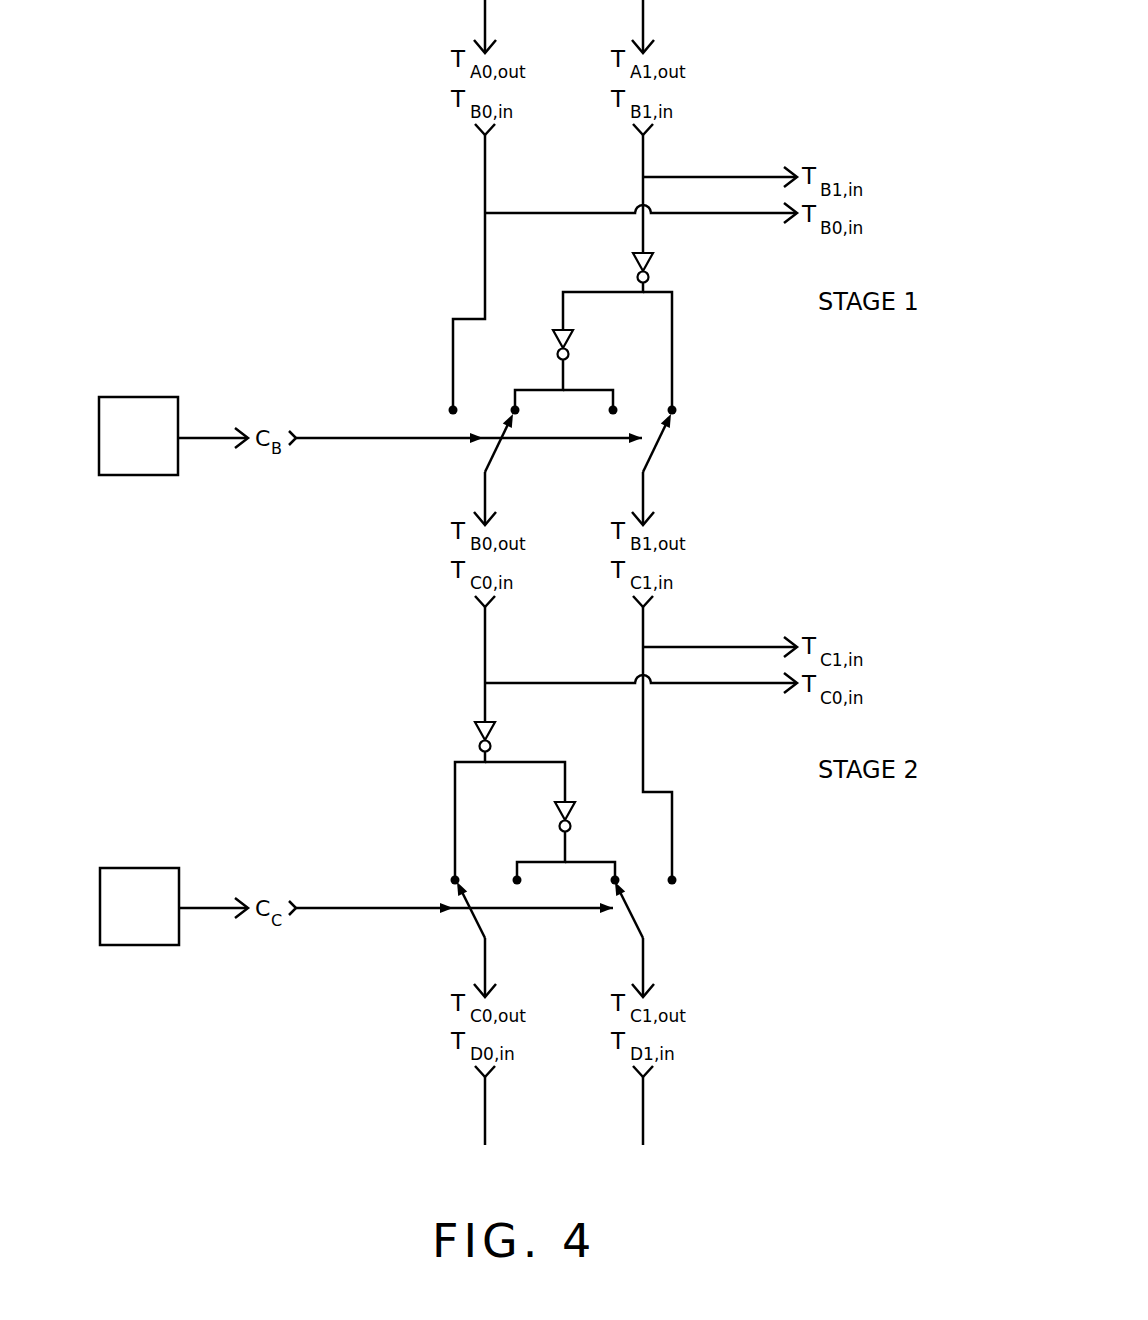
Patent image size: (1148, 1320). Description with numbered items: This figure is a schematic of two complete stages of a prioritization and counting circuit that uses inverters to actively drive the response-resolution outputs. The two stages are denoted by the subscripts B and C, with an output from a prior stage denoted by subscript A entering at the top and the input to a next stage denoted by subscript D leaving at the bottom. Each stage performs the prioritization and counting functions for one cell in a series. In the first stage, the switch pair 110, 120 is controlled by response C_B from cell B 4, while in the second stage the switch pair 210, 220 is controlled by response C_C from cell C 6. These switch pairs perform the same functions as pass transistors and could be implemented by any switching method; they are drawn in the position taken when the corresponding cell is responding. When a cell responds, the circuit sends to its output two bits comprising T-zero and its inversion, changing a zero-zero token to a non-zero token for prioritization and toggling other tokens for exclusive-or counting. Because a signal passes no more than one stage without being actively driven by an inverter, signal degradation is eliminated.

The cell B 4 is at (138, 479).
The cell C 6 is at (139, 950).
The switch 110 is at (447, 447).
The switch 120 is at (698, 447).
The switch 210 is at (431, 917).
The switch 220 is at (678, 916).